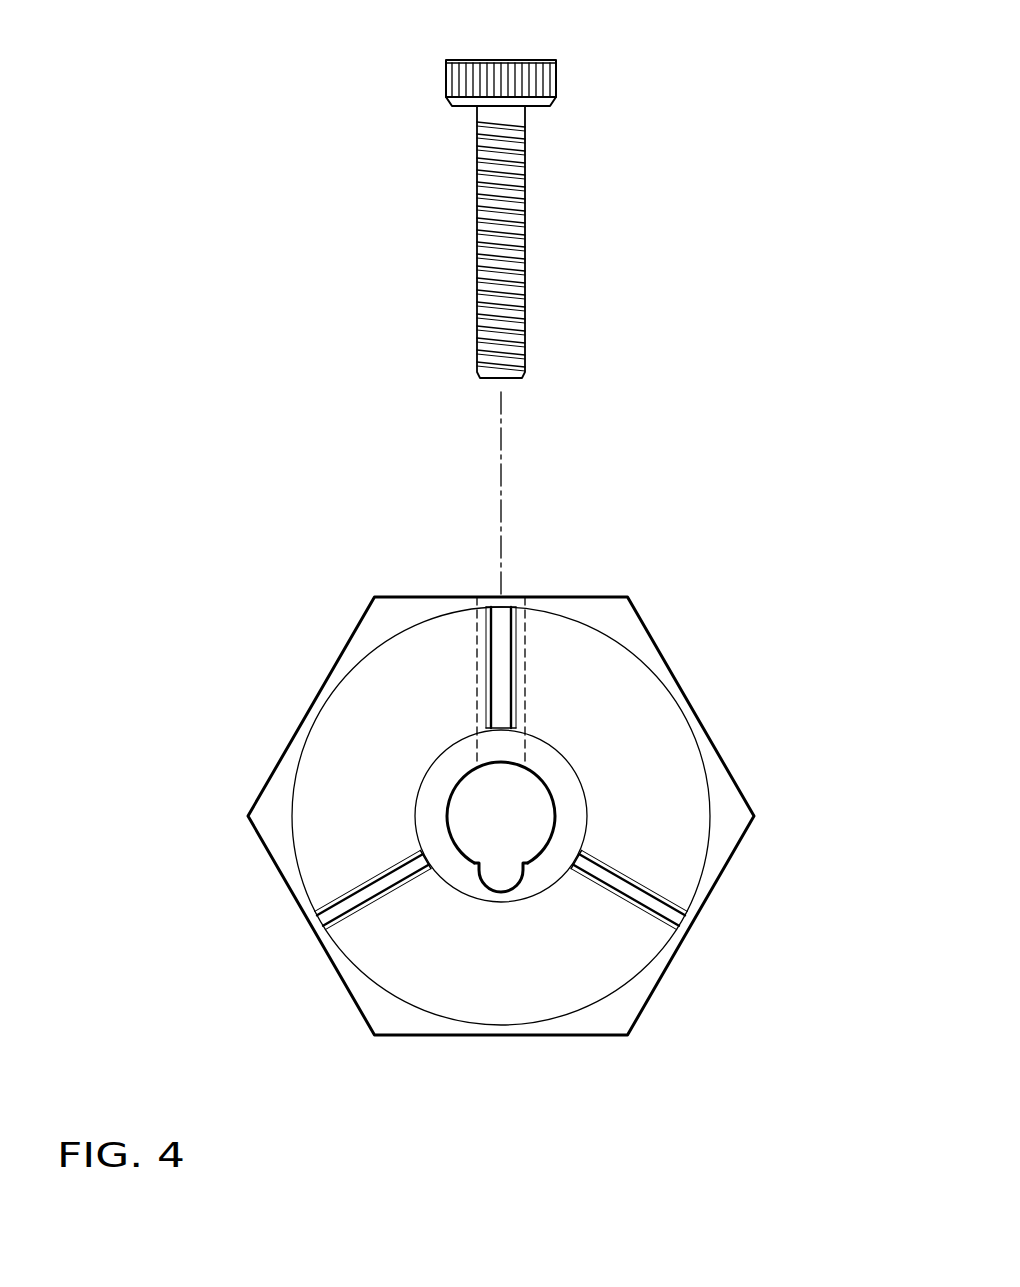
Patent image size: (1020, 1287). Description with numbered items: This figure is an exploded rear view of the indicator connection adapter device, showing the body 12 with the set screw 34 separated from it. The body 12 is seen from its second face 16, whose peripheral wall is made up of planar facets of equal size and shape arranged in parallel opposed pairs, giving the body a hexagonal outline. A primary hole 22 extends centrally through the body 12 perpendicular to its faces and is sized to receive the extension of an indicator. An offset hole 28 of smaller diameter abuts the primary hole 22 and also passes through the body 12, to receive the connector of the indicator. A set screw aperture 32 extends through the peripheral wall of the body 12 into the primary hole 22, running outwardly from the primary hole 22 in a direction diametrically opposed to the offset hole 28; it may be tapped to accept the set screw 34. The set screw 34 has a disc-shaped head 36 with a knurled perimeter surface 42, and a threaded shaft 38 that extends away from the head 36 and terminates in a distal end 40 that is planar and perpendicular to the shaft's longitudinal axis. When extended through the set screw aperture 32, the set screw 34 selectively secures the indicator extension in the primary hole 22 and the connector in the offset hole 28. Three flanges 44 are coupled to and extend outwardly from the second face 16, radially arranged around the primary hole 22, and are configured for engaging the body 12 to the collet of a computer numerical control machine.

The body 12 is at (665, 657).
The second face 16 is at (343, 724).
The primary hole 22 is at (515, 795).
The offset hole 28 is at (502, 878).
The set screw aperture 32 is at (511, 585).
The set screw 34 is at (550, 273).
The head 36 is at (563, 55).
The shaft 38 is at (536, 305).
The distal end 40 is at (526, 108).
The perimeter surface 42 is at (557, 78).
The flanges 44 is at (320, 910).